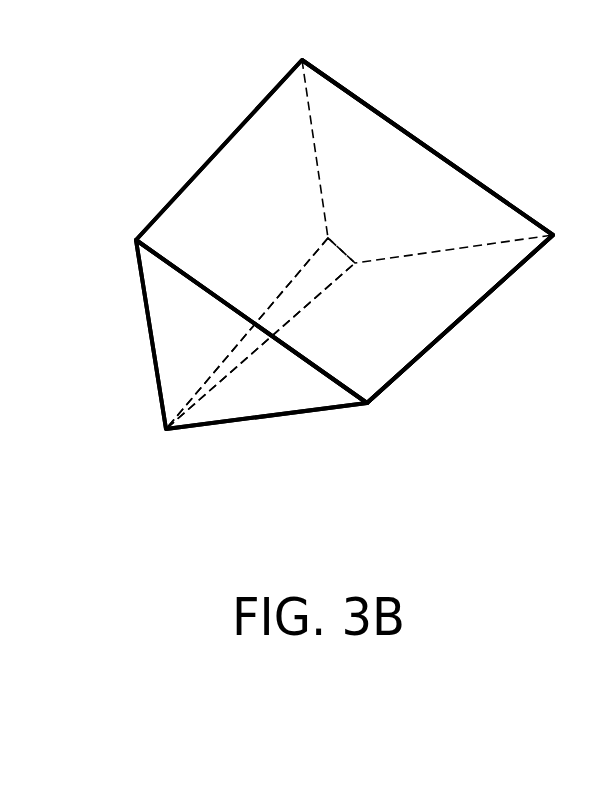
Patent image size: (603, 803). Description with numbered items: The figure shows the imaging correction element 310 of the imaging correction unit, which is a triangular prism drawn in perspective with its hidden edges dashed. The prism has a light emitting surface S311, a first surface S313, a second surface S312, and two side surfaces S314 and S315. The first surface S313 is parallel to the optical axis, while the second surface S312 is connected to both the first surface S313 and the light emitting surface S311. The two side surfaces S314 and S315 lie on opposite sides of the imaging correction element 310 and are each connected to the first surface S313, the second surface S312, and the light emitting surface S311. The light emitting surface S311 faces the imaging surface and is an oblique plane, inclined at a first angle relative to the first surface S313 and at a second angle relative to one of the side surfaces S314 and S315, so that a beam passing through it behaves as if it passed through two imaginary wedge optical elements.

The imaging correction element 310 is at (570, 517).
The light emitting surface S311 is at (176, 310).
The second surface S312 is at (365, 362).
The first surface S313 is at (387, 312).
The side surface S314 is at (387, 176).
The side surface S315 is at (250, 387).